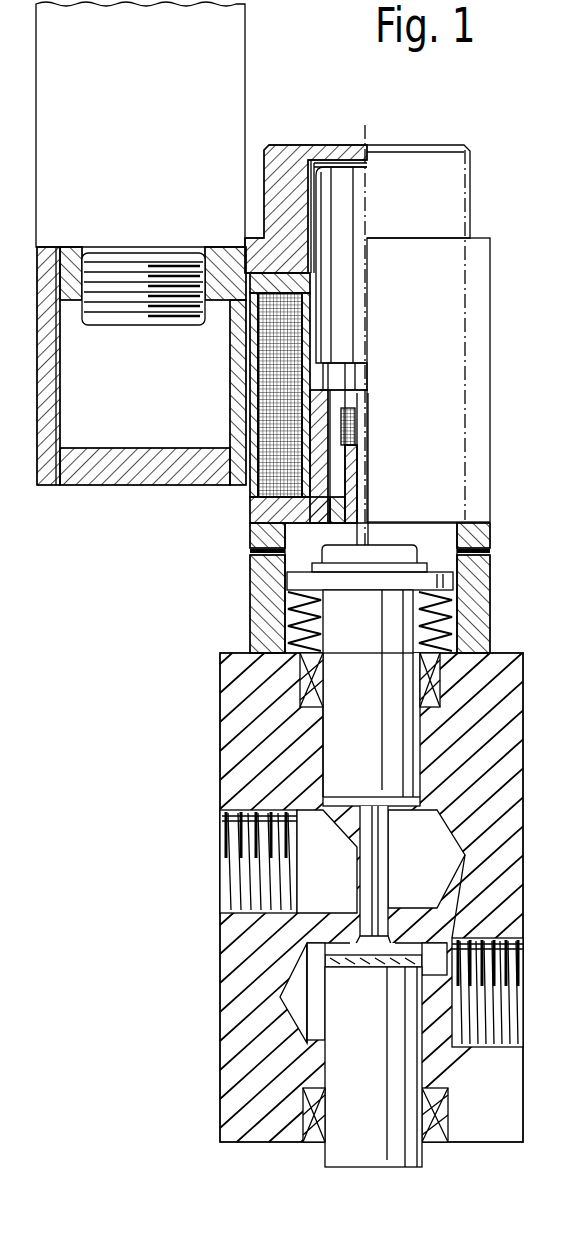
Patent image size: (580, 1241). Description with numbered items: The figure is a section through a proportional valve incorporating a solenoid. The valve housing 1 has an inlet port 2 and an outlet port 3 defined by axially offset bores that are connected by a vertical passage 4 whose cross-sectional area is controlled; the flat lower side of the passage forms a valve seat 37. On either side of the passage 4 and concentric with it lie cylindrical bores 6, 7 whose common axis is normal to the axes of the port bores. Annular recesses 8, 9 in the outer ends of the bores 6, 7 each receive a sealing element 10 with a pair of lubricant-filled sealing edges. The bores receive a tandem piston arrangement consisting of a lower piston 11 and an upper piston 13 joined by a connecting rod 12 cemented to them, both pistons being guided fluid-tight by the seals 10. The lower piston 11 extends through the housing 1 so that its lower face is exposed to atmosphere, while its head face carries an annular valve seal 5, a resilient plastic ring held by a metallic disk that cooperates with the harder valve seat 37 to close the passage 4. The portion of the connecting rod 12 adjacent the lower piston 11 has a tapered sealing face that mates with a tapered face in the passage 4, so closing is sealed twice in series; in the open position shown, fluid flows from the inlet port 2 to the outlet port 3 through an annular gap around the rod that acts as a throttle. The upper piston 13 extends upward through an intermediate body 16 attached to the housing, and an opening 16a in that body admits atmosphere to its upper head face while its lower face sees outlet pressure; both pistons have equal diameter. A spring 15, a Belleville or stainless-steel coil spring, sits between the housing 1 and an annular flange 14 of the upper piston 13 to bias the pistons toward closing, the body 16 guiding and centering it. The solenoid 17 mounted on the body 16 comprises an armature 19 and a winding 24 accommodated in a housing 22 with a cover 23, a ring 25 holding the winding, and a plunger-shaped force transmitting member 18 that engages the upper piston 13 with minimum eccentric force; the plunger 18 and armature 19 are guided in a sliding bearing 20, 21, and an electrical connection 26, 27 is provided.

The valve housing 1 is at (485, 737).
The inlet port 2 is at (515, 968).
The outlet port 3 is at (230, 828).
The passage 4 is at (353, 928).
The valve seal 5 is at (328, 960).
The cylindrical bore 6 is at (327, 1063).
The cylindrical bore 7 is at (322, 765).
The annular recess 8 is at (300, 694).
The annular recess 9 is at (303, 1113).
The sealing element 10 is at (440, 688).
The lower piston 11 is at (370, 1145).
The connecting rod 12 is at (367, 878).
The upper piston 13 is at (398, 760).
The annular flange 14 is at (447, 579).
The spring 15 is at (443, 614).
The intermediate body 16 is at (258, 627).
The opening 16a is at (458, 553).
The solenoid 17 is at (336, 330).
The force transmitting member 18 is at (268, 498).
The armature 19 is at (345, 188).
The sliding bearing 20 is at (300, 527).
The sliding bearing 21 is at (296, 205).
The housing 22 is at (450, 373).
The cover 23 is at (456, 197).
The winding 24 is at (273, 420).
The ring 25 is at (245, 247).
The electrical connection 26 is at (115, 430).
The electrical connection 27 is at (244, 42).
The valve seat 37 is at (483, 907).